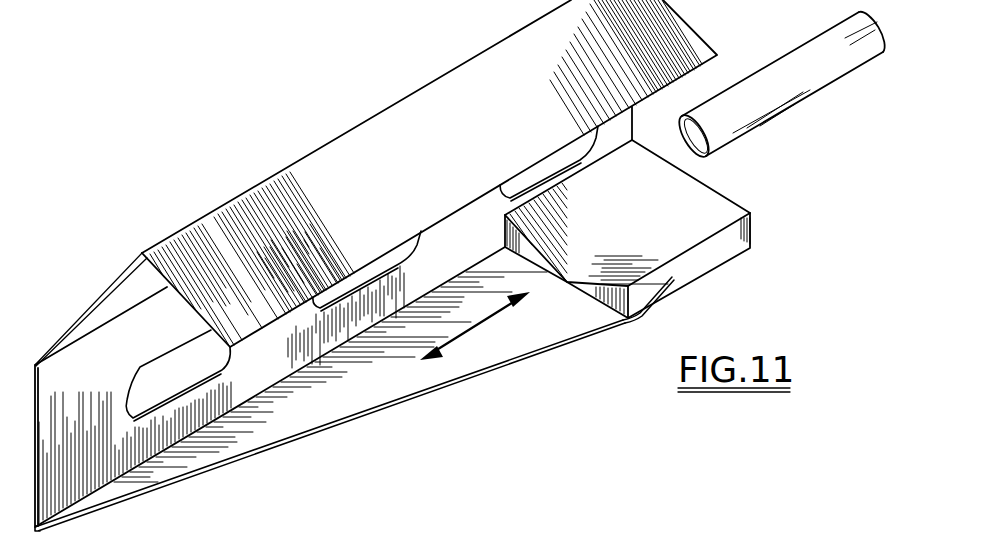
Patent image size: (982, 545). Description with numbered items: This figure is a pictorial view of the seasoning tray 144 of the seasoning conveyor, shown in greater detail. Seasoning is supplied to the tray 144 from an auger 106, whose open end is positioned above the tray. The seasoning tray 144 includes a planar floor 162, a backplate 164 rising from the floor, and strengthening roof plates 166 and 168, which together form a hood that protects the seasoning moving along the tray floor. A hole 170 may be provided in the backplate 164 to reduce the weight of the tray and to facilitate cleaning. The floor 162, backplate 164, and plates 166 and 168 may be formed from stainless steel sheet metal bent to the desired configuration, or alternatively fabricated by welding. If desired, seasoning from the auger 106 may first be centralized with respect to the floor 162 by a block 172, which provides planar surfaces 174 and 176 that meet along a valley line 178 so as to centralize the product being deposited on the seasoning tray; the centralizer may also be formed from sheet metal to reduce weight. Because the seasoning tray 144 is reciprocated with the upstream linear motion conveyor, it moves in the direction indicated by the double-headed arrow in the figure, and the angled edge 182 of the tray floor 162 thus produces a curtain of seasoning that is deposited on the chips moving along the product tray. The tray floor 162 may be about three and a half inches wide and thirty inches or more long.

The auger 106 is at (810, 97).
The seasoning tray 144 is at (157, 183).
The planar floor 162 is at (442, 325).
The backplate 164 is at (102, 390).
The strengthening roof plate 166 is at (114, 282).
The strengthening roof plate 168 is at (332, 219).
The hole 170 is at (192, 386).
The block 172 is at (728, 292).
The planar surface 174 is at (715, 208).
The planar surface 176 is at (627, 192).
The valley line 178 is at (655, 203).
The angled edge 182 is at (343, 423).